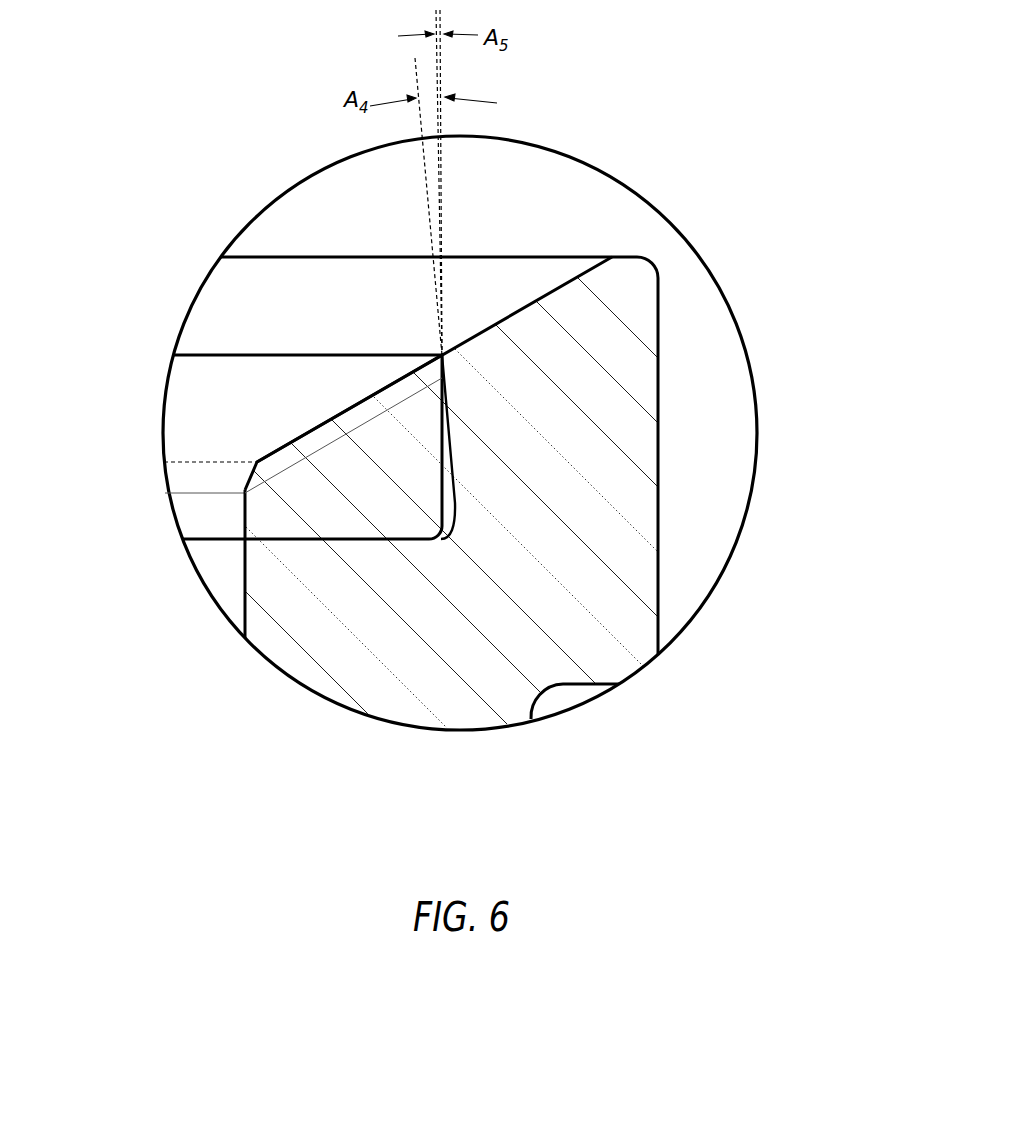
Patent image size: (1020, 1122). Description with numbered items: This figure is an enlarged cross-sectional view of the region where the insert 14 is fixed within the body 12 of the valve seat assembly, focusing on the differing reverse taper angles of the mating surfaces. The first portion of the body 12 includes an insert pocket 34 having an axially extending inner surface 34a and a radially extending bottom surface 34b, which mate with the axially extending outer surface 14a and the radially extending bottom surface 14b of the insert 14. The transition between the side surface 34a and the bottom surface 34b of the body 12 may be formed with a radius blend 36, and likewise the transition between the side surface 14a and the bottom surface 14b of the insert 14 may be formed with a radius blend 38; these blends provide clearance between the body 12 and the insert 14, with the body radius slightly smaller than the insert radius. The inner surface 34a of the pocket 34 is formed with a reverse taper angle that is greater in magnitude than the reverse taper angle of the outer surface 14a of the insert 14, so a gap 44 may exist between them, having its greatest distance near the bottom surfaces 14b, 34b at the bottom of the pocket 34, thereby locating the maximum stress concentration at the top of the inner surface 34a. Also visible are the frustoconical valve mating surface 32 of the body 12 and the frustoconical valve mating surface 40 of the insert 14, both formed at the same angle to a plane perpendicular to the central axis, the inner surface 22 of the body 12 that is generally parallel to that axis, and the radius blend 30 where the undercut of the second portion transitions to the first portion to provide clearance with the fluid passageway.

The body 12 is at (667, 401).
The insert 14 is at (150, 432).
The axially extending outer surface of the insert 14a is at (447, 462).
The radially extending bottom surface of the insert 14b is at (348, 541).
The inner surface 22 is at (240, 578).
The radius blend 30 is at (546, 697).
The frustoconical valve mating surface 32 is at (517, 275).
The insert pocket 34 is at (428, 529).
The axially extending inner surface 34a is at (448, 524).
The radially extending bottom surface 34b is at (315, 538).
The radius blend 36 is at (381, 458).
The radius blend 38 is at (422, 529).
The frustoconical valve mating surface 40 is at (193, 390).
The gap 44 is at (452, 504).